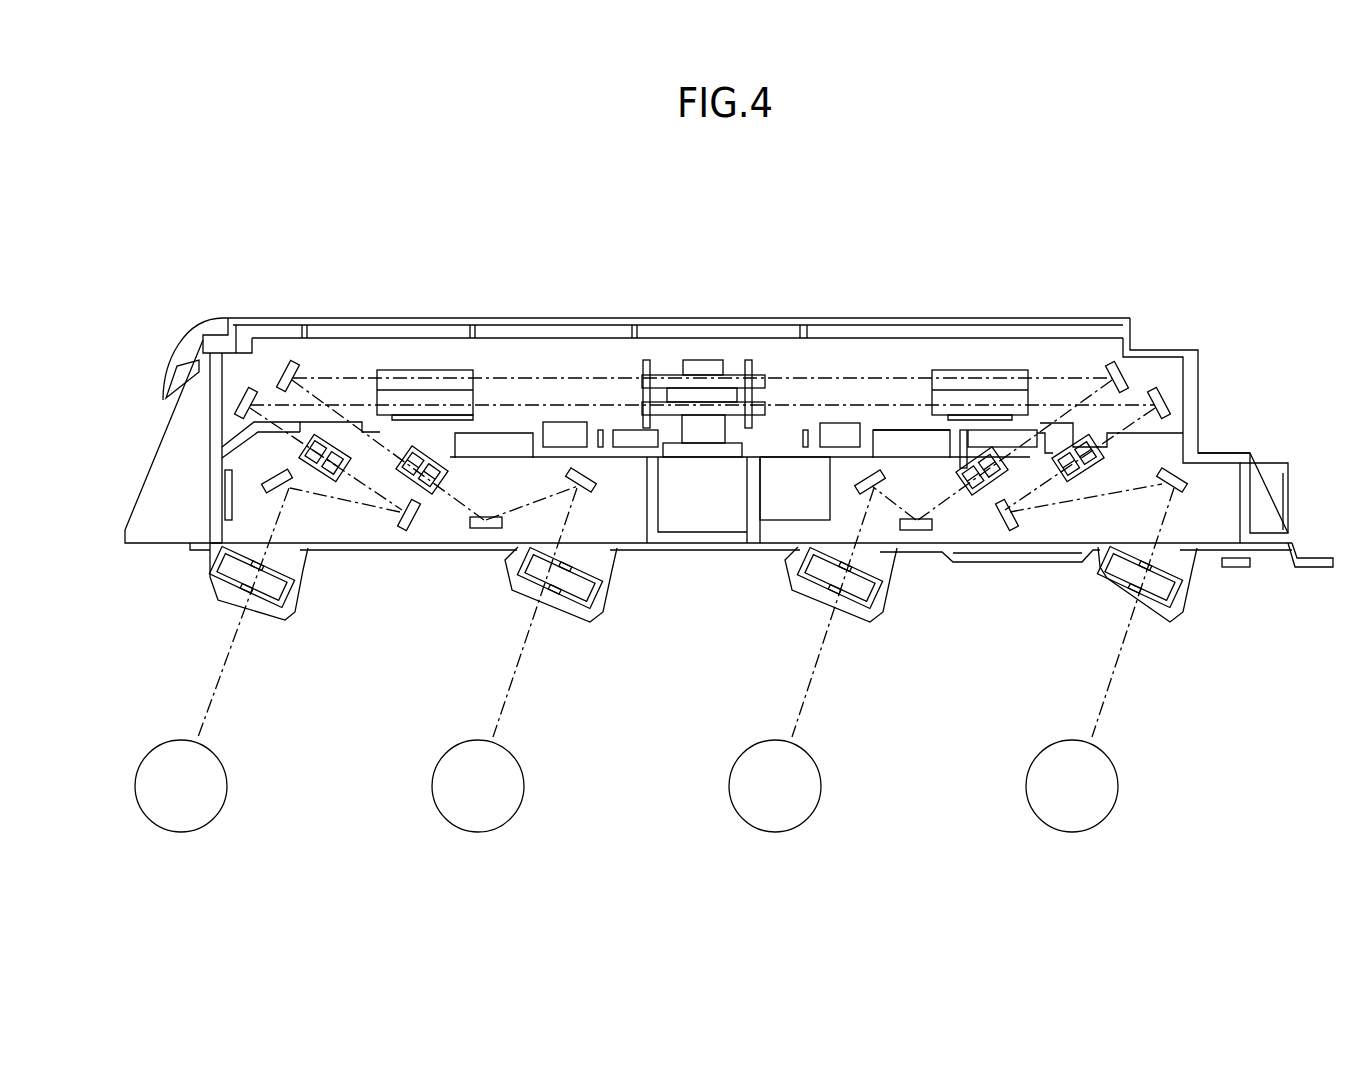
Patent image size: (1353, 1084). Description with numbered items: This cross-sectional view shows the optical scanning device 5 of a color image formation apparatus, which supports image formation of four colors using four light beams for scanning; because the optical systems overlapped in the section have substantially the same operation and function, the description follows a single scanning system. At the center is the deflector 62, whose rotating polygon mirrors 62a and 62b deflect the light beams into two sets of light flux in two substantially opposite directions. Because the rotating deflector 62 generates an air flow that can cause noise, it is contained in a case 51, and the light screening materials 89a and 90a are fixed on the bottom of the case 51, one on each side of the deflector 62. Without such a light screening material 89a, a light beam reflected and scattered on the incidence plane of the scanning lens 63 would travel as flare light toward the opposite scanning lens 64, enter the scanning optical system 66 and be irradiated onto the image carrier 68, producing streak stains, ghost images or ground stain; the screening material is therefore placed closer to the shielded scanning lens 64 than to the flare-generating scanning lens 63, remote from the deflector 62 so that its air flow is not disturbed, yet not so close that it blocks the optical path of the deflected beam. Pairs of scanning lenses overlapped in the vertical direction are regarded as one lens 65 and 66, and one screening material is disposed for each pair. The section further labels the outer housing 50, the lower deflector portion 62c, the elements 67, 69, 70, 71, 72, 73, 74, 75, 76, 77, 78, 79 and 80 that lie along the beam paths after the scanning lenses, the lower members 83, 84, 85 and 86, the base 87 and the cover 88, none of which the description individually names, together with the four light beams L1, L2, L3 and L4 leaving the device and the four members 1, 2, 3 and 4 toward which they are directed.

The optical scanning device 5 is at (152, 170).
The housing 50 is at (1235, 455).
The case 51 is at (880, 423).
The deflector 62 is at (711, 419).
The rotating polygon mirror 62a is at (658, 376).
The rotating polygon mirror 62b is at (642, 400).
The polygon motor 62c is at (688, 525).
The scanning lens 63 is at (978, 370).
The scanning lens 64 is at (420, 370).
The lens 65 is at (1117, 362).
The scanning optical system 66 is at (287, 361).
The reflecting mirror 67 is at (1160, 388).
The image carrier 68 is at (246, 386).
The imaging lens 69 is at (1083, 487).
The imaging lens 70 is at (981, 493).
The imaging lens 71 is at (430, 473).
The imaging lens 72 is at (322, 466).
The reflecting mirror 73 is at (1010, 530).
The reflecting mirror 74 is at (1175, 488).
The reflecting mirror 75 is at (918, 530).
The reflecting mirror 76 is at (857, 487).
The reflecting mirror 77 is at (485, 528).
The reflecting mirror 78 is at (583, 490).
The reflecting mirror 79 is at (408, 532).
The reflecting mirror 80 is at (285, 486).
The light transmitting window unit 83 is at (1150, 582).
The light transmitting window unit 84 is at (850, 582).
The light transmitting window unit 85 is at (555, 584).
The light transmitting window unit 86 is at (234, 578).
The bottom plate 87 is at (725, 552).
The top cover 88 is at (537, 318).
The light screening material 89a is at (646, 372).
The light screening material 90a is at (749, 372).
The laser beam L1 is at (1107, 688).
The laser beam L2 is at (809, 688).
The laser beam L3 is at (511, 688).
The laser beam L4 is at (215, 688).
The photosensitive drum 1 is at (1110, 785).
The photosensitive drum 2 is at (813, 785).
The photosensitive drum 3 is at (516, 785).
The photosensitive drum 4 is at (219, 785).